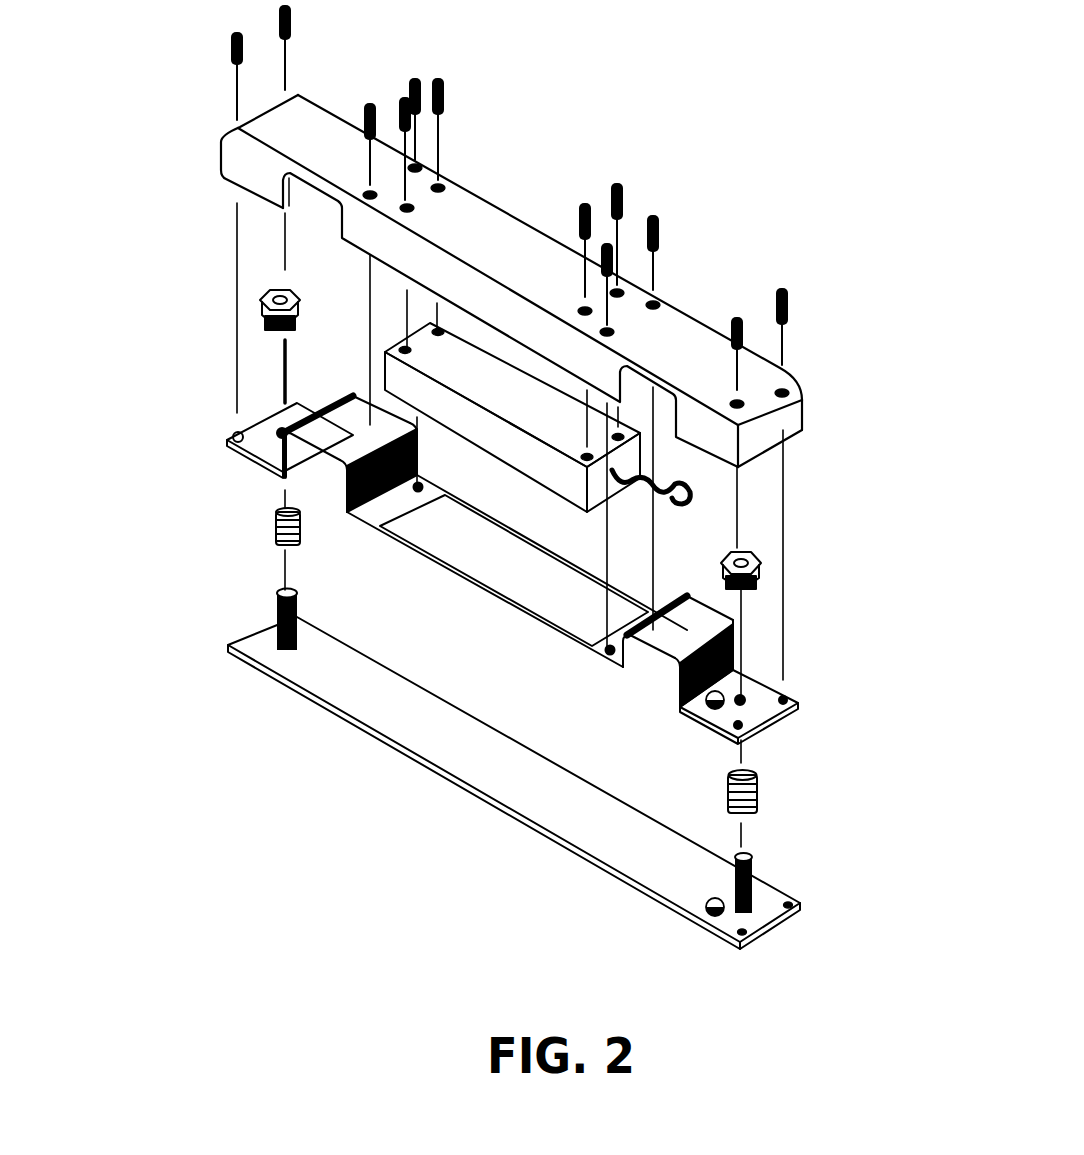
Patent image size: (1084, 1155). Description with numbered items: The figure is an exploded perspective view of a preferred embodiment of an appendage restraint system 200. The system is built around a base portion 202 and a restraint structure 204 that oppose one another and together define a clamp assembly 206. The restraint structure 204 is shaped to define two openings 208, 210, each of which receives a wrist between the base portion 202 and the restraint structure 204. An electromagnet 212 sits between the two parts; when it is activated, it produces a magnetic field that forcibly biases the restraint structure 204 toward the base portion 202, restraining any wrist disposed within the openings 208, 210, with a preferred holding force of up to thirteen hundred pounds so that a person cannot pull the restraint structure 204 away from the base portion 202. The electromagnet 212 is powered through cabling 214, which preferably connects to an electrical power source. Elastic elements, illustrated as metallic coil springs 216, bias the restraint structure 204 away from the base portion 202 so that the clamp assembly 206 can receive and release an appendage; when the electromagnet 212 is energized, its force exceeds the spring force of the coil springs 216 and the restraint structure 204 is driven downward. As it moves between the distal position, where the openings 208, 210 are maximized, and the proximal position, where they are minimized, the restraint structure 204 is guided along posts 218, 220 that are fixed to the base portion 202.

The appendage restraint system 200 is at (690, 106).
The base portion 202 is at (377, 717).
The restraint structure 204 is at (200, 143).
The clamp assembly 206 is at (815, 383).
The opening 208 is at (330, 488).
The opening 210 is at (652, 669).
The electromagnet 212 is at (493, 443).
The cabling 214 is at (660, 498).
The coil spring 216 is at (272, 522).
The post 218 is at (275, 592).
The post 220 is at (752, 862).